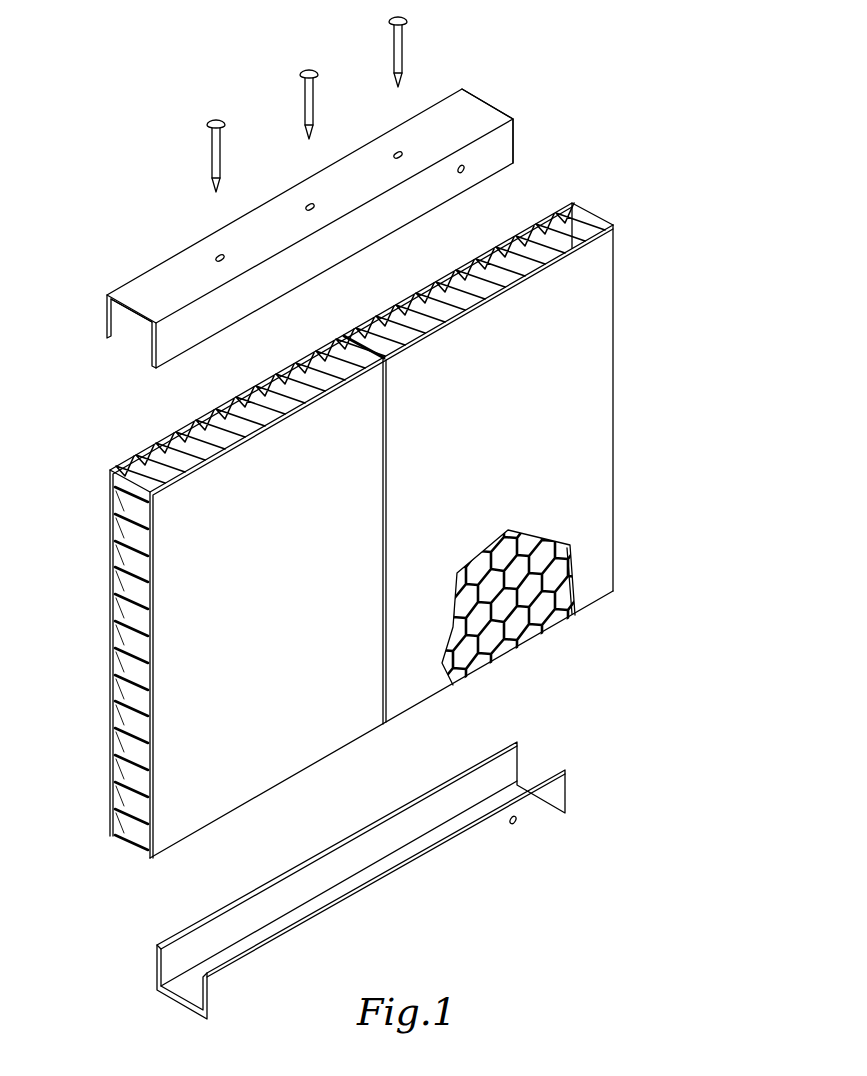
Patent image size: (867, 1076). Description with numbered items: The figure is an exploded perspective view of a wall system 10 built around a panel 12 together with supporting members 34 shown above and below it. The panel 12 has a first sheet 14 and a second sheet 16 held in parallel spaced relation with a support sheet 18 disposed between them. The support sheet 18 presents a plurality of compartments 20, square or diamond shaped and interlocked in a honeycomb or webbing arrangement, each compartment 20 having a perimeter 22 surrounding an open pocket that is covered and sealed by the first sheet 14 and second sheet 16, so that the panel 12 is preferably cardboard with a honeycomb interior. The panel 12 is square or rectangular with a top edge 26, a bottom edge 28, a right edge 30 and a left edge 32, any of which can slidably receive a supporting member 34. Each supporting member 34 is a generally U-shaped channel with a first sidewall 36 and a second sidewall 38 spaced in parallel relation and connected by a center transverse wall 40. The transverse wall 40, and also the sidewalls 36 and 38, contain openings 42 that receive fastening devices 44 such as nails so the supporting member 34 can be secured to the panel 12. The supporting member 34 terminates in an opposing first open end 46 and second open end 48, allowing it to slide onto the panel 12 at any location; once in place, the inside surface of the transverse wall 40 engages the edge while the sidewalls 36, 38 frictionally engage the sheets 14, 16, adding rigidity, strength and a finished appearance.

The wall system 10 is at (603, 55).
The panel 12 is at (595, 213).
The first sheet 14 is at (512, 233).
The second sheet 16 is at (490, 258).
The support sheet 18 is at (553, 227).
The compartments 20 is at (518, 637).
The perimeter 22 is at (555, 625).
The top edge 26 is at (141, 472).
The bottom edge 28 is at (303, 782).
The right edge 30 is at (630, 382).
The left edge 32 is at (112, 640).
The supporting member 34 is at (470, 77).
The first sidewall 36 is at (323, 260).
The second sidewall 38 is at (107, 300).
The transverse wall 40 is at (322, 188).
The openings 42 is at (218, 257).
The fastening devices 44 is at (303, 106).
The first open end 46 is at (135, 342).
The second open end 48 is at (518, 137).